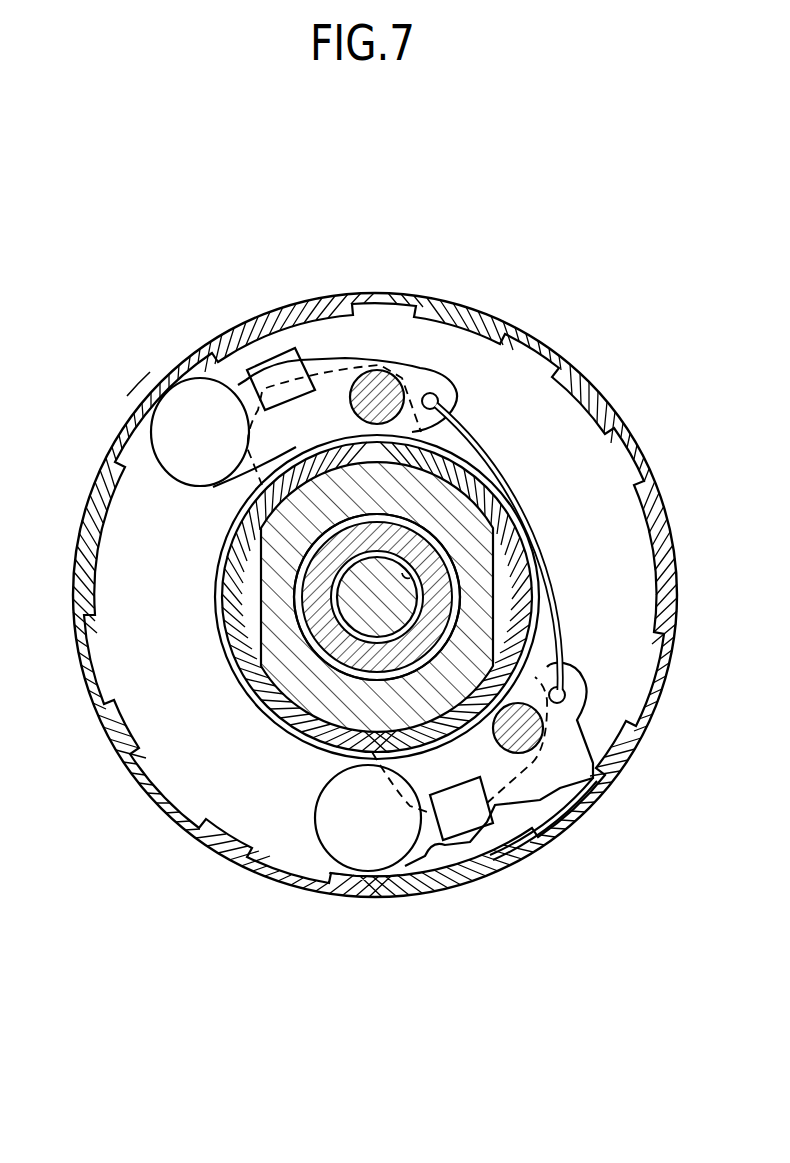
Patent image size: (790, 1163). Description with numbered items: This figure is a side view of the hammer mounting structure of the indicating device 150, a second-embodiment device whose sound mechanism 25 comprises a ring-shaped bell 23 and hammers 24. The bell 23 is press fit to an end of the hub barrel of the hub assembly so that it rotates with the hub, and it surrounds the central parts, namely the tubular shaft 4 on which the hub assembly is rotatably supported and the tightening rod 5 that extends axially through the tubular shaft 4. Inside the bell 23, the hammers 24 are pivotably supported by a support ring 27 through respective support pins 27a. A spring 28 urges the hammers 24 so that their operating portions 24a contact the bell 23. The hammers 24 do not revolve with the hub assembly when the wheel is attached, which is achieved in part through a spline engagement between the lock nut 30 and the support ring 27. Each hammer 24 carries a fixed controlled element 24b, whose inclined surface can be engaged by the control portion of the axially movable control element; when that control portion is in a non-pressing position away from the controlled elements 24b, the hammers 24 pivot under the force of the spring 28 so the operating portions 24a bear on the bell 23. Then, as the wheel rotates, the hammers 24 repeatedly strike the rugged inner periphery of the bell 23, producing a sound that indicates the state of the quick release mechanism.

The indicating device 150 is at (362, 232).
The bell 23 is at (571, 360).
The hammers 24 is at (188, 481).
The operating portions 24a is at (172, 412).
The controlled elements 24b is at (263, 366).
The sound mechanism 25 is at (149, 370).
The support ring 27 is at (236, 603).
The support pins 27a is at (386, 374).
The spring 28 is at (482, 447).
The tubular shaft 4 is at (310, 612).
The lock nut 30 is at (322, 668).
The tightening rod 5 is at (407, 573).